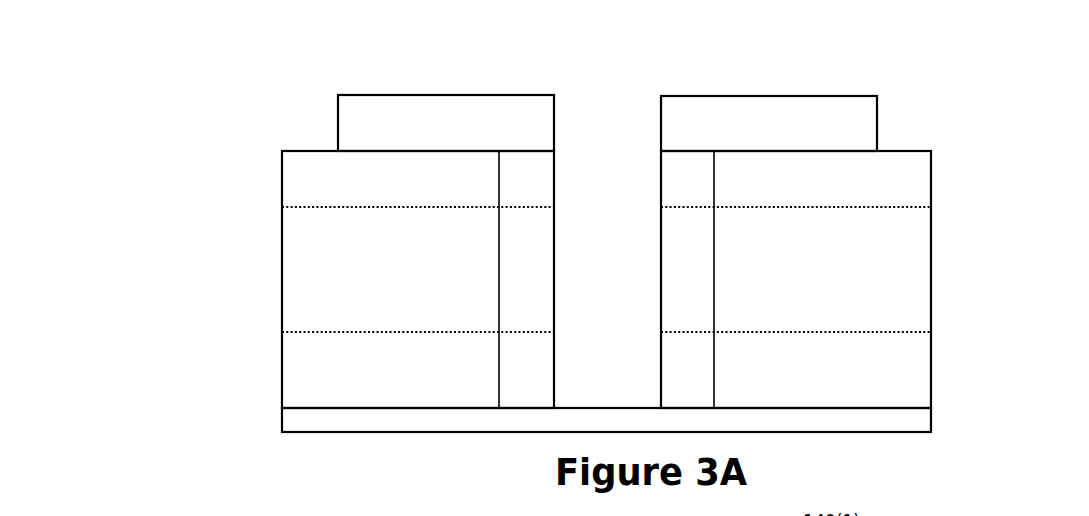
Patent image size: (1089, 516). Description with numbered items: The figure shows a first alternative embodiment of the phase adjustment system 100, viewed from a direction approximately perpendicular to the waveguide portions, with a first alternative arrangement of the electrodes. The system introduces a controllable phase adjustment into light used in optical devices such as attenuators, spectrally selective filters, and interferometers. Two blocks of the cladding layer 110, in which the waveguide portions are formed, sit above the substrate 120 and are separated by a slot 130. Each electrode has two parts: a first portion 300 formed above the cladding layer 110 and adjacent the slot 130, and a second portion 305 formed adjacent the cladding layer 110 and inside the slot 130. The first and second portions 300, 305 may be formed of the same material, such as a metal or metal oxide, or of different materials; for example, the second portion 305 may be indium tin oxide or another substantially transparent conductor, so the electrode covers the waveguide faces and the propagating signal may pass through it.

The phase adjustment system 100 is at (140, 170).
The device layer 110 is at (282, 185).
The substrate 120 is at (908, 433).
The slot 130 is at (592, 105).
The first portion of the electrode 300 is at (338, 118).
The second portion of the electrode 305 is at (554, 183).